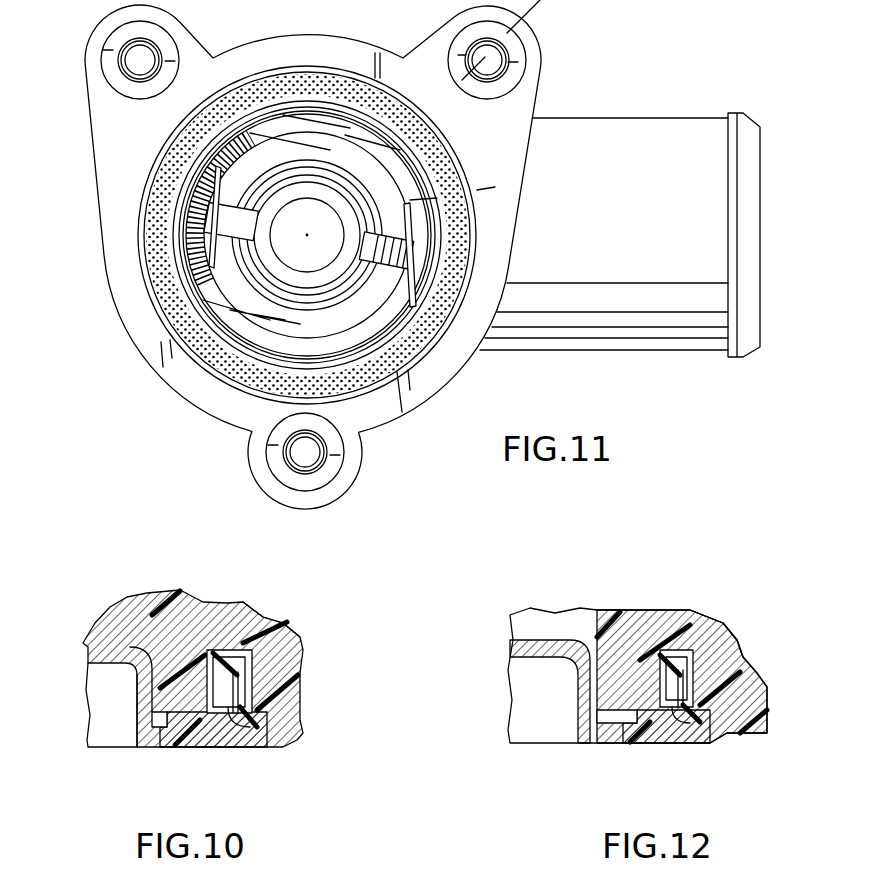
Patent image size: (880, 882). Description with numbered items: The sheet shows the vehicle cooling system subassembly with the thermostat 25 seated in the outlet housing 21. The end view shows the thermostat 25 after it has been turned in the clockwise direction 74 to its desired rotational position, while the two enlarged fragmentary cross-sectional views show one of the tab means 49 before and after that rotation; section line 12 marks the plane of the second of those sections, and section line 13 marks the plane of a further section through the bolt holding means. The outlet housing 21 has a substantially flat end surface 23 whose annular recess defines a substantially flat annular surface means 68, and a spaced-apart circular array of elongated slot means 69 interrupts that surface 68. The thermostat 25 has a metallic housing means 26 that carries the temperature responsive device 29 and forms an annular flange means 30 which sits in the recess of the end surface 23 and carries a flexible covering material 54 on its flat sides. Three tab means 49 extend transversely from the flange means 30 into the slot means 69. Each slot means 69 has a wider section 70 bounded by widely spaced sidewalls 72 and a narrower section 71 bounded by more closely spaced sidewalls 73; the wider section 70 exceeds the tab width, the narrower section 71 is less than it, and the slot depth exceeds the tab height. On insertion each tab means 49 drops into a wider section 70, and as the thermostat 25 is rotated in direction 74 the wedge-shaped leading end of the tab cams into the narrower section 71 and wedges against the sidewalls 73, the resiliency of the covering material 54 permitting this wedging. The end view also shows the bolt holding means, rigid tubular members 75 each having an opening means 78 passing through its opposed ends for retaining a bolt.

In FIG. 11, the section line 12 is at (500, 207).
In FIG. 11, the section line 13 is at (533, 0).
In FIG. 11, the outlet housing 21 is at (623, 114).
In FIG. 12, the outlet housing 21 is at (767, 707).
In FIG. 11, the flat end surface 23 is at (153, 353).
In FIG. 10, the flat end surface 23 is at (292, 737).
In FIG. 12, the flat end surface 23 is at (735, 735).
In FIG. 11, the thermostat 25 is at (160, 323).
In FIG. 11, the housing means 26 is at (217, 217).
In FIG. 11, the temperature responsive device 29 is at (303, 260).
In FIG. 11, the annular flange means 30 is at (163, 280).
In FIG. 10, the annular flange means 30 is at (232, 747).
In FIG. 12, the annular flange means 30 is at (682, 743).
In FIG. 11, the tab means 49 is at (187, 127).
In FIG. 10, the tab means 49 is at (238, 675).
In FIG. 12, the tab means 49 is at (693, 680).
In FIG. 11, the covering material 54 is at (207, 360).
In FIG. 10, the covering material 54 is at (247, 747).
In FIG. 12, the covering material 54 is at (657, 743).
In FIG. 10, the annular surface means 68 is at (167, 713).
In FIG. 12, the annular surface means 68 is at (623, 713).
In FIG. 11, the slot means 69 is at (167, 163).
In FIG. 10, the slot means 69 is at (240, 650).
In FIG. 12, the slot means 69 is at (677, 647).
In FIG. 11, the wider section 70 is at (167, 167).
In FIG. 10, the wider section 70 is at (210, 675).
In FIG. 11, the narrower section 71 is at (250, 402).
In FIG. 12, the narrower section 71 is at (690, 655).
In FIG. 10, the sidewalls 72 is at (192, 650).
In FIG. 12, the sidewalls 73 is at (645, 690).
In FIG. 11, the clockwise direction 74 is at (402, 352).
In FIG. 11, the tubular member 75 is at (457, 50).
In FIG. 11, the opening means 78 is at (500, 62).